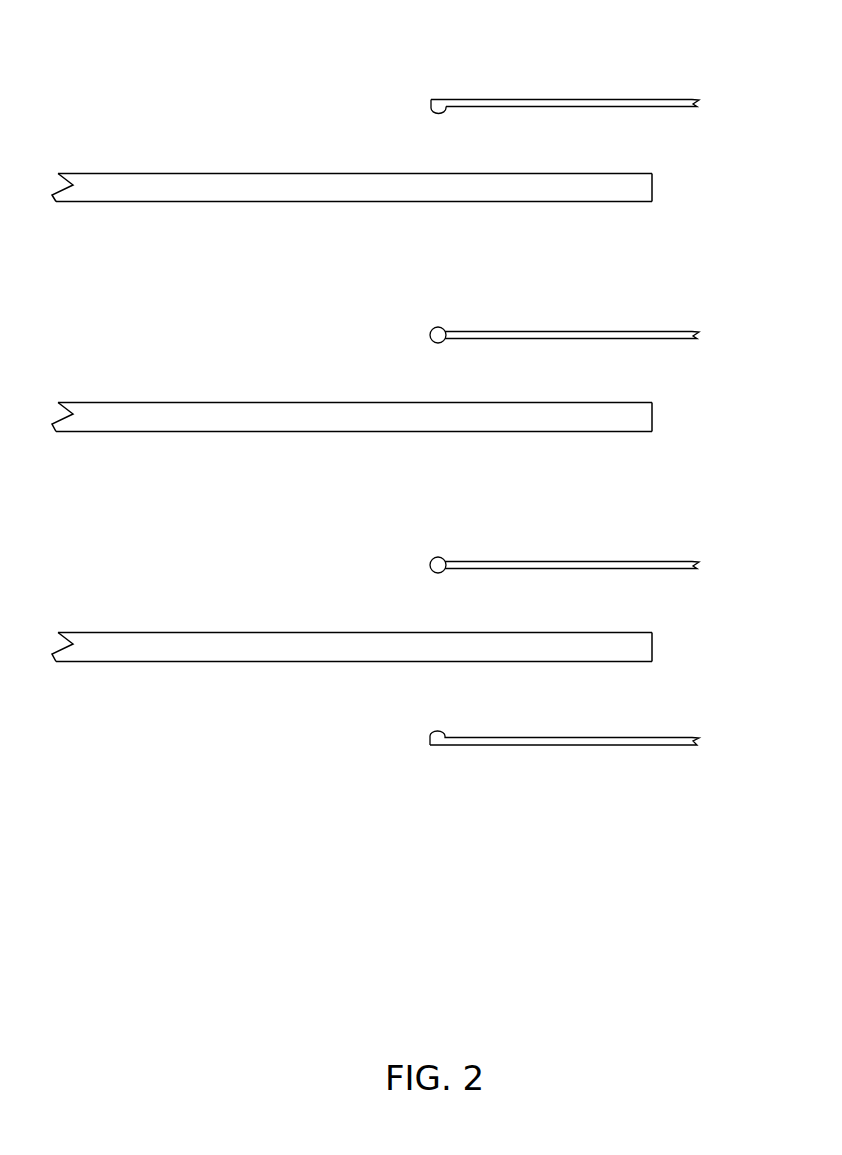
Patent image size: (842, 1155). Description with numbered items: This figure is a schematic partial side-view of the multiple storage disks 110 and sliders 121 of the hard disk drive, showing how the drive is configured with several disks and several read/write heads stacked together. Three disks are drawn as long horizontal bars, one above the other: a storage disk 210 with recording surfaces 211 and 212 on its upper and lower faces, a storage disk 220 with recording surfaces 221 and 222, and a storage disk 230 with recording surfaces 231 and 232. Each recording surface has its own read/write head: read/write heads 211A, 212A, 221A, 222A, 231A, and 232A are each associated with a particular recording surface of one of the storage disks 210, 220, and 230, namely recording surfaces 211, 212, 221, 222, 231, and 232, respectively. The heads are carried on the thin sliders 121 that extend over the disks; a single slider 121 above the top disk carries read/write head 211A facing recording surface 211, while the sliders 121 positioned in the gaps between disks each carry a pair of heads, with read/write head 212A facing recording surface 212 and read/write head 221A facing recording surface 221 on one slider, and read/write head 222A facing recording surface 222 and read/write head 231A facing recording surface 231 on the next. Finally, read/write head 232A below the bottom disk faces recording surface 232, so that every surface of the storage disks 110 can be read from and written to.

The storage disks 110 is at (404, 419).
The storage disk 210 is at (404, 188).
The storage disk 220 is at (404, 419).
The storage disk 230 is at (404, 649).
The recording surface 211 is at (170, 173).
The recording surface 212 is at (170, 202).
The recording surface 221 is at (170, 402).
The recording surface 222 is at (170, 432).
The recording surface 231 is at (170, 632).
The recording surface 232 is at (170, 662).
The sliders 121 is at (510, 392).
The read/write head 211A is at (432, 113).
The read/write head 212A is at (435, 323).
The read/write head 221A is at (437, 345).
The read/write head 222A is at (435, 553).
The read/write head 231A is at (437, 575).
The read/write head 232A is at (438, 733).